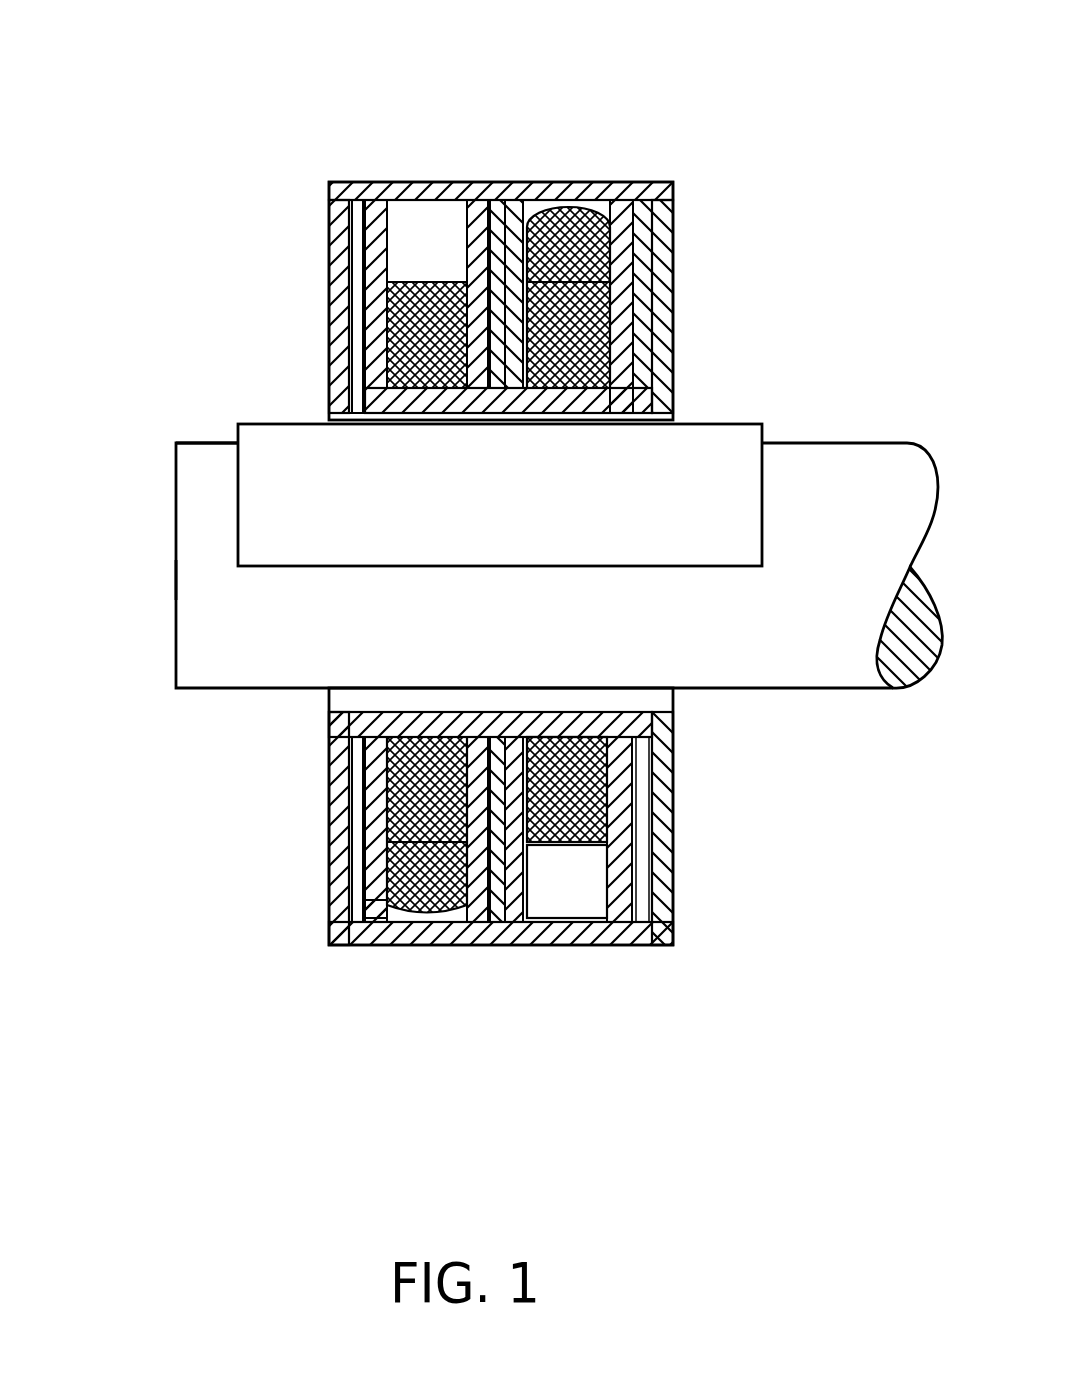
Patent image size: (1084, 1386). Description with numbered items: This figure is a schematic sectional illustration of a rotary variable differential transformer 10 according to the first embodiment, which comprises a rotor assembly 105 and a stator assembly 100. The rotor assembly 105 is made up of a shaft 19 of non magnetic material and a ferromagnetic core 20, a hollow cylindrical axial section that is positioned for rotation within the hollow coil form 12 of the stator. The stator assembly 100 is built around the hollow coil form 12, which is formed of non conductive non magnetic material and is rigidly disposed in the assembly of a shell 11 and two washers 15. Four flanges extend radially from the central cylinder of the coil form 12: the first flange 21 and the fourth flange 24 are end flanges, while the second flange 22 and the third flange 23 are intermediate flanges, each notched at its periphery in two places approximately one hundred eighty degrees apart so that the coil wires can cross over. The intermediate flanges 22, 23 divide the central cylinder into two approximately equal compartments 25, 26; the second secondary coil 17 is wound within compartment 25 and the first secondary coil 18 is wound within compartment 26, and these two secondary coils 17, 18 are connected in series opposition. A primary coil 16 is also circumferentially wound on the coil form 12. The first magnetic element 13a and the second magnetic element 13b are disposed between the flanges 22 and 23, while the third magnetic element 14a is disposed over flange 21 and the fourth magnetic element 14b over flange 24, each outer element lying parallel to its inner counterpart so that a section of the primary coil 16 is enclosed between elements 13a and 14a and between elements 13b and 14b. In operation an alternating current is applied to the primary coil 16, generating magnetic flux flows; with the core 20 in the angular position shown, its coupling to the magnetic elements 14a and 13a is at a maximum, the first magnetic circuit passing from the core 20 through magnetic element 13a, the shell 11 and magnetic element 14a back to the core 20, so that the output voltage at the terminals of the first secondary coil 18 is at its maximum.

The rotary variable differential transformer 10 is at (712, 398).
The shaft 19 is at (206, 470).
The rotor assembly 105 is at (168, 595).
The ferromagnetic core 20 is at (294, 446).
The stator assembly 100 is at (300, 303).
The third magnetic element 14a is at (640, 250).
The fourth magnetic element 14b is at (347, 945).
The compartment 25 is at (427, 220).
The primary coil 16 is at (545, 205).
The first magnetic element 13a is at (495, 215).
The second magnetic element 13b is at (495, 900).
The first secondary coil 18 is at (583, 368).
The shell 11 is at (620, 200).
The washer 15 is at (350, 898).
The fourth flange 24 is at (375, 920).
The second secondary coil 17 is at (377, 790).
The third flange 23 is at (483, 900).
The second flange 22 is at (517, 910).
The compartment 26 is at (565, 880).
The first flange 21 is at (618, 910).
The hollow coil form 12 is at (620, 723).